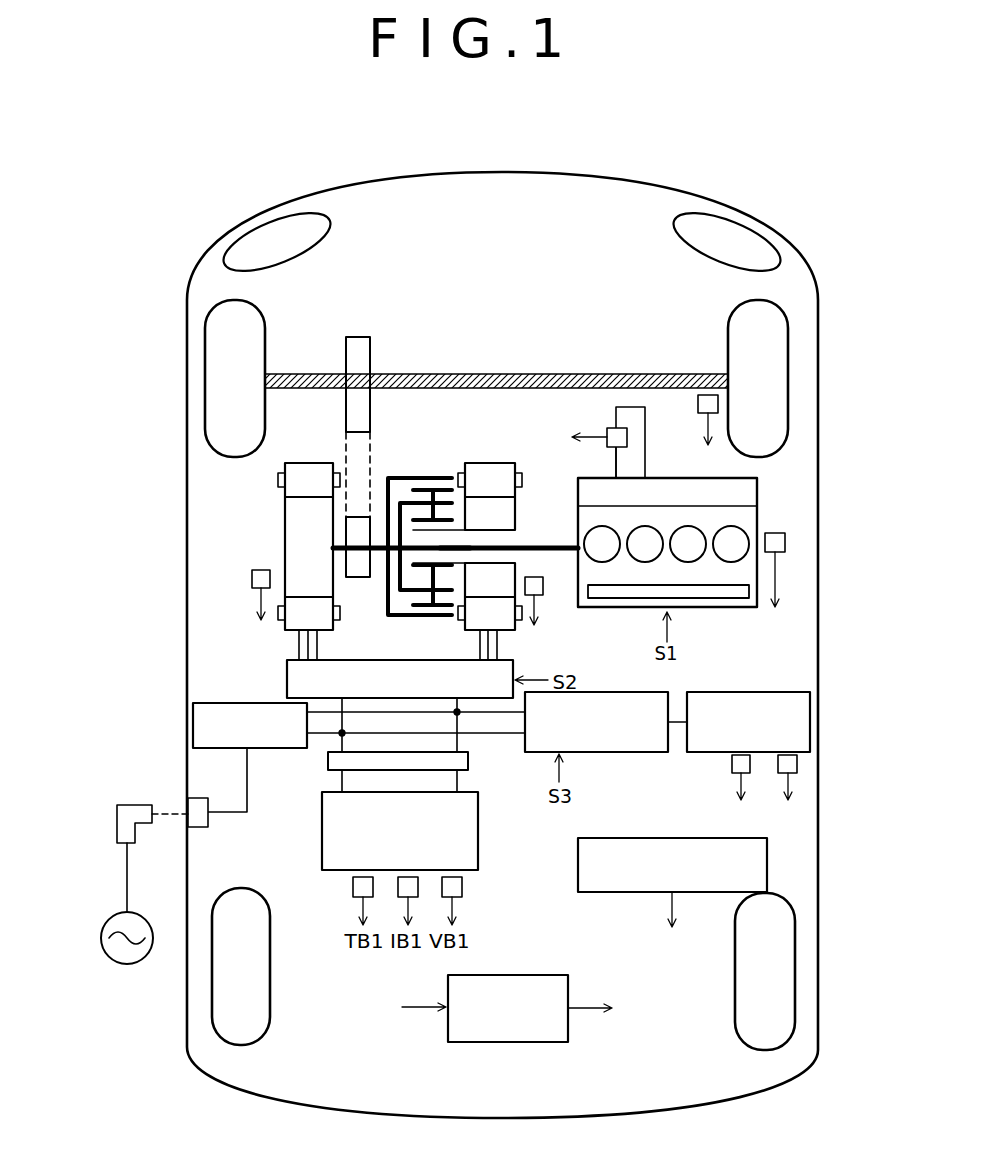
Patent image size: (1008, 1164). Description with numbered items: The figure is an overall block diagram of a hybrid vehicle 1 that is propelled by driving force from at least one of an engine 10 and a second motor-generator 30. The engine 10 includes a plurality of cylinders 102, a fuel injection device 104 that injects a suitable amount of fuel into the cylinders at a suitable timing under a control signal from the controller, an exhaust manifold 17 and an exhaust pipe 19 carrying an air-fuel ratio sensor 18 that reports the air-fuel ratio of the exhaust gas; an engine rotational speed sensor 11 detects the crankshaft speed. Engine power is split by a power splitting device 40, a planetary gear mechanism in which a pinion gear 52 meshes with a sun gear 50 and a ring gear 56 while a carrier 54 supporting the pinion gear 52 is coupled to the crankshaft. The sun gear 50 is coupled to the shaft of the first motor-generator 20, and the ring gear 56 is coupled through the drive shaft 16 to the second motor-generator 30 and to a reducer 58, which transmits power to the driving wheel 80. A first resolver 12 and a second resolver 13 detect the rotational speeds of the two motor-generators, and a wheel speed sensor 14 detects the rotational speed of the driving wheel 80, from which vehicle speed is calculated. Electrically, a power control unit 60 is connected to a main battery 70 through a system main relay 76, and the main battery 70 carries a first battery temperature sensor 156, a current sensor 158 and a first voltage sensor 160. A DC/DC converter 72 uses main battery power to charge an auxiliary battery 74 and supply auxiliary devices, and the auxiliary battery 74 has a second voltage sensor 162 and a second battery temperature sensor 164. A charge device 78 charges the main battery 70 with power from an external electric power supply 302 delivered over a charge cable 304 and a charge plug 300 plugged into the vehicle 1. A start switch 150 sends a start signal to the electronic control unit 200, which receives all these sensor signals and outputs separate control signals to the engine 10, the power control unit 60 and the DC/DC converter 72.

The vehicle 1 is at (468, 142).
The engine 10 is at (588, 607).
The engine rotational speed sensor 11 is at (776, 533).
The first resolver 12 is at (536, 577).
The second resolver 13 is at (262, 570).
The wheel speed sensor 14 is at (698, 403).
The drive shaft 16 is at (378, 557).
The exhaust manifold 17 is at (616, 475).
The air-fuel ratio sensor 18 is at (607, 430).
The exhaust pipe 19 is at (620, 407).
The first motor-generator 20 is at (490, 463).
The second motor-generator 30 is at (310, 463).
The power splitting device 40 is at (442, 455).
The sun gear 50 is at (443, 555).
The pinion gear 52 is at (445, 605).
The carrier 54 is at (400, 593).
The ring gear 56 is at (390, 478).
The reducer 58 is at (358, 337).
The power control unit 60 is at (287, 678).
The main battery 70 is at (322, 830).
The DC/DC converter 72 is at (608, 692).
The auxiliary battery 74 is at (752, 692).
The system main relay 76 is at (468, 760).
The charge device 78 is at (193, 723).
The driving wheel 80 is at (737, 305).
The cylinders 102 is at (687, 527).
The fuel injection device 104 is at (712, 598).
The start switch 150 is at (650, 838).
The first battery temperature sensor 156 is at (353, 886).
The current sensor 158 is at (412, 877).
The first voltage sensor 160 is at (462, 886).
The second voltage sensor 162 is at (797, 762).
The second battery temperature sensor 164 is at (732, 762).
The electronic control unit 200 is at (508, 1042).
The charge plug 300 is at (133, 805).
The external electric power supply 302 is at (134, 912).
The charge cable 304 is at (127, 860).